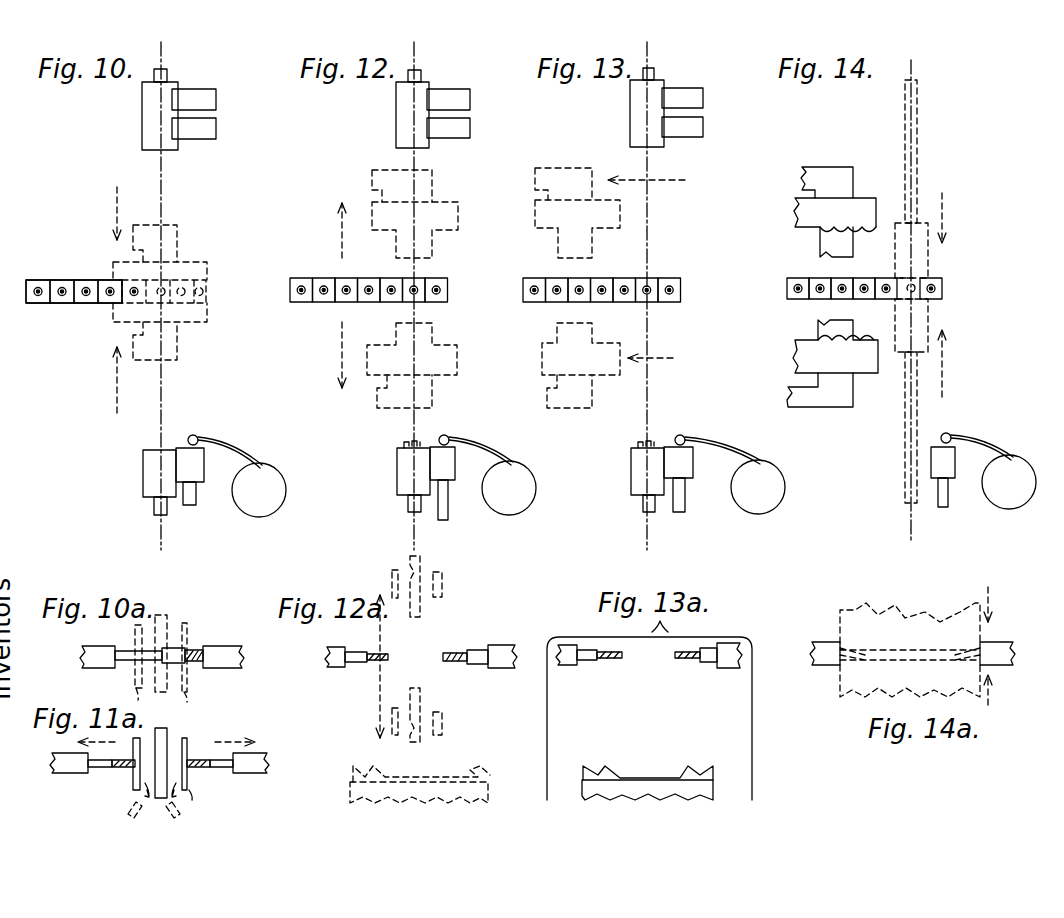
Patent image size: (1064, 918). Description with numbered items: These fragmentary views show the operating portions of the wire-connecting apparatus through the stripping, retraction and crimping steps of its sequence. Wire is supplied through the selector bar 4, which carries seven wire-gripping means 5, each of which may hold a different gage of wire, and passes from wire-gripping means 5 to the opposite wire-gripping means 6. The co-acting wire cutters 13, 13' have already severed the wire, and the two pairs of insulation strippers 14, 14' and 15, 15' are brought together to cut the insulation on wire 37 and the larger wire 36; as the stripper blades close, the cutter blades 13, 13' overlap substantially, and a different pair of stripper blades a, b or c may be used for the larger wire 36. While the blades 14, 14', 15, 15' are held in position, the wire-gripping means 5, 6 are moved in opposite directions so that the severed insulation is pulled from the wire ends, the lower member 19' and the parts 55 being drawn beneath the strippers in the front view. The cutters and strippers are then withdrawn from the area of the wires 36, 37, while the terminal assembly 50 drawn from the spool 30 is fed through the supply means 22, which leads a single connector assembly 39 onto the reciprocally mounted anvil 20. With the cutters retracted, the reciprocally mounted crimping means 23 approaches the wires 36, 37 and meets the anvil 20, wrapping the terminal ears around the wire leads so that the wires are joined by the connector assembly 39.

In FIG. 10, the selector bar 4 is at (68, 306).
In FIG. 14, the selector bar 4 is at (790, 302).
In FIG. 10, the wire-gripping means 5 is at (42, 280).
In FIG. 10A, the wire-gripping means 5 is at (225, 668).
In FIG. 11A, the wire-gripping means 5 is at (250, 774).
In FIG. 10A, the wire-gripping means 6 is at (85, 669).
In FIG. 11A, the wire-gripping means 6 is at (62, 774).
In FIG. 10, the wire cutter 13 is at (173, 243).
In FIG. 12, the wire cutter 13 is at (418, 186).
In FIG. 13, the wire cutter 13 is at (563, 172).
In FIG. 14, the wire cutter 13 is at (827, 168).
In FIG. 10A, the wire cutter 13 is at (179, 639).
In FIG. 12A, the wire cutter 13 is at (424, 578).
In FIG. 10, the wire cutter 13' is at (178, 341).
In FIG. 12, the wire cutter 13' is at (425, 391).
In FIG. 13, the wire cutter 13' is at (569, 404).
In FIG. 14, the wire cutter 13' is at (821, 403).
In FIG. 12A, the wire cutter 13' is at (430, 705).
In FIG. 10, the insulation stripper 14 is at (177, 282).
In FIG. 12, the insulation stripper 14 is at (432, 230).
In FIG. 13, the insulation stripper 14 is at (590, 229).
In FIG. 14, the insulation stripper 14 is at (838, 216).
In FIG. 10A, the insulation stripper 14 is at (125, 655).
In FIG. 12A, the insulation stripper 14 is at (383, 580).
In FIG. 10, the insulation stripper 14' is at (179, 311).
In FIG. 12, the insulation stripper 14' is at (433, 349).
In FIG. 13, the insulation stripper 14' is at (587, 362).
In FIG. 14, the insulation stripper 14' is at (842, 363).
In FIG. 12A, the insulation stripper 14' is at (397, 708).
In FIG. 10A, the insulation stripper 15 is at (202, 652).
In FIG. 11A, the insulation stripper 15 is at (197, 756).
In FIG. 12A, the insulation stripper 15 is at (450, 584).
In FIG. 10A, the insulation stripper 15' is at (191, 704).
In FIG. 11A, the insulation stripper 15' is at (199, 803).
In FIG. 12A, the insulation stripper 15' is at (454, 721).
In FIG. 10A, the lower plate 19' is at (139, 702).
In FIG. 10, the anvil 20 is at (143, 471).
In FIG. 12, the anvil 20 is at (397, 475).
In FIG. 13, the anvil 20 is at (631, 475).
In FIG. 14, the anvil 20 is at (895, 319).
In FIG. 12A, the anvil 20 is at (483, 795).
In FIG. 13A, the anvil 20 is at (584, 787).
In FIG. 14A, the anvil 20 is at (840, 693).
In FIG. 10, the supply means 22 is at (204, 467).
In FIG. 12, the supply means 22 is at (455, 466).
In FIG. 13, the supply means 22 is at (693, 466).
In FIG. 14, the supply means 22 is at (955, 463).
In FIG. 10, the crimping means 23 is at (148, 133).
In FIG. 12, the crimping means 23 is at (396, 129).
In FIG. 13, the crimping means 23 is at (630, 123).
In FIG. 14, the crimping means 23 is at (895, 260).
In FIG. 14A, the crimping means 23 is at (898, 612).
In FIG. 10, the spool 30 is at (272, 487).
In FIG. 12, the spool 30 is at (522, 483).
In FIG. 13, the spool 30 is at (750, 500).
In FIG. 14, the spool 30 is at (996, 498).
In FIG. 10A, the wire 36 is at (200, 665).
In FIG. 11A, the wire 36 is at (216, 770).
In FIG. 12A, the wire 36 is at (478, 665).
In FIG. 13A, the wire 36 is at (707, 665).
In FIG. 10A, the wire 37 is at (123, 665).
In FIG. 11A, the wire 37 is at (100, 768).
In FIG. 12A, the wire 37 is at (355, 668).
In FIG. 13A, the wire 37 is at (588, 668).
In FIG. 12, the connector assembly 39 is at (406, 443).
In FIG. 13, the connector assembly 39 is at (640, 443).
In FIG. 12A, the connector assembly 39 is at (482, 776).
In FIG. 13A, the connector assembly 39 is at (680, 772).
In FIG. 10, the terminal assembly 50 is at (249, 456).
In FIG. 12, the terminal assembly 50 is at (503, 456).
In FIG. 13, the terminal assembly 50 is at (727, 455).
In FIG. 14, the terminal assembly 50 is at (982, 455).
In FIG. 11A, the cutter blades 55 is at (154, 803).